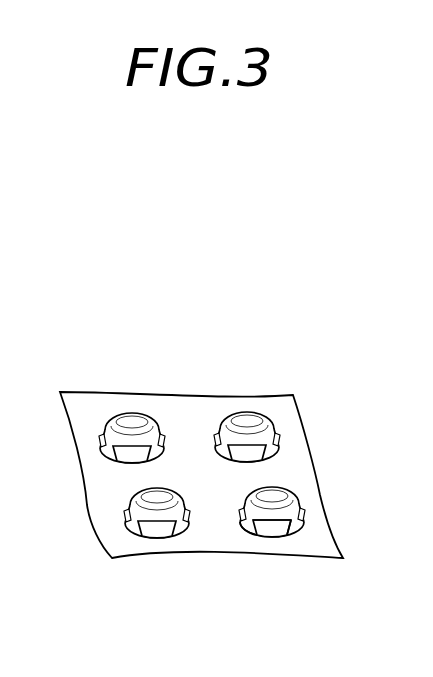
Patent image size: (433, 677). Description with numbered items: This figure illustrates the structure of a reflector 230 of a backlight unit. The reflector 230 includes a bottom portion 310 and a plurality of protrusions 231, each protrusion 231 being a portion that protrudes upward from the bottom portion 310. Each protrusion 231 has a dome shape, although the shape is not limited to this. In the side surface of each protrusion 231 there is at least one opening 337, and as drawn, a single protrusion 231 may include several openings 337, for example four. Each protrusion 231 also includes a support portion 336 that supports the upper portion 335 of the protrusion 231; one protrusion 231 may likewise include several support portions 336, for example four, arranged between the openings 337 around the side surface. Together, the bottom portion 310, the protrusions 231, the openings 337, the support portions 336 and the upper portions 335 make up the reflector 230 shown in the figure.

The reflector 230 is at (258, 368).
The bottom portion 310 is at (292, 471).
The protrusion 231 is at (283, 605).
The upper portion 335 is at (265, 527).
The support portion 336 is at (241, 538).
The opening 337 is at (291, 535).